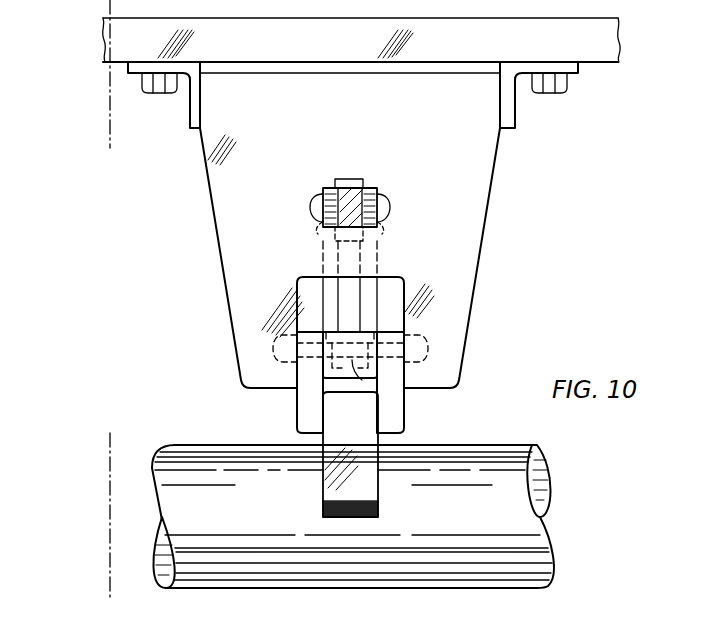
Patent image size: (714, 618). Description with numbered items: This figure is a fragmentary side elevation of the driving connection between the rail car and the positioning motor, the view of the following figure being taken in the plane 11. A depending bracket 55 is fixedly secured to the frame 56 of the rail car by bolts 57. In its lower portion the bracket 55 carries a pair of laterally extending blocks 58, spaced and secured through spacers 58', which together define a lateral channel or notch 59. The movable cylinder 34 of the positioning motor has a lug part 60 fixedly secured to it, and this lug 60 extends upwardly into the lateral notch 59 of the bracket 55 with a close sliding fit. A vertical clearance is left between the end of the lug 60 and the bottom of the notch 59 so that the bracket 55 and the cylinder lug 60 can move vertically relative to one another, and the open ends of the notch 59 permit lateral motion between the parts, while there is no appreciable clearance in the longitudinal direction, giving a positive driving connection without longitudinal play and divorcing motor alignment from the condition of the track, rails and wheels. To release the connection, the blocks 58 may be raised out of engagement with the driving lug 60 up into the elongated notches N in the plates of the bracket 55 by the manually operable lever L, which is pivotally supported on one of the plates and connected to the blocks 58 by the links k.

The section plane 11— 11 is at (108, 13).
The movable cylinder 34 is at (533, 532).
The depending bracket 55 is at (480, 188).
The frame 56 is at (120, 32).
The bolts 57 is at (104, 88).
The laterally extending blocks 58 is at (350, 387).
The spacers 58' is at (402, 350).
The lateral channel or notch 59 is at (338, 383).
The lug part 60 is at (378, 472).
The manually operable lever L is at (380, 191).
The links k is at (323, 250).
The elongated notches N is at (400, 309).